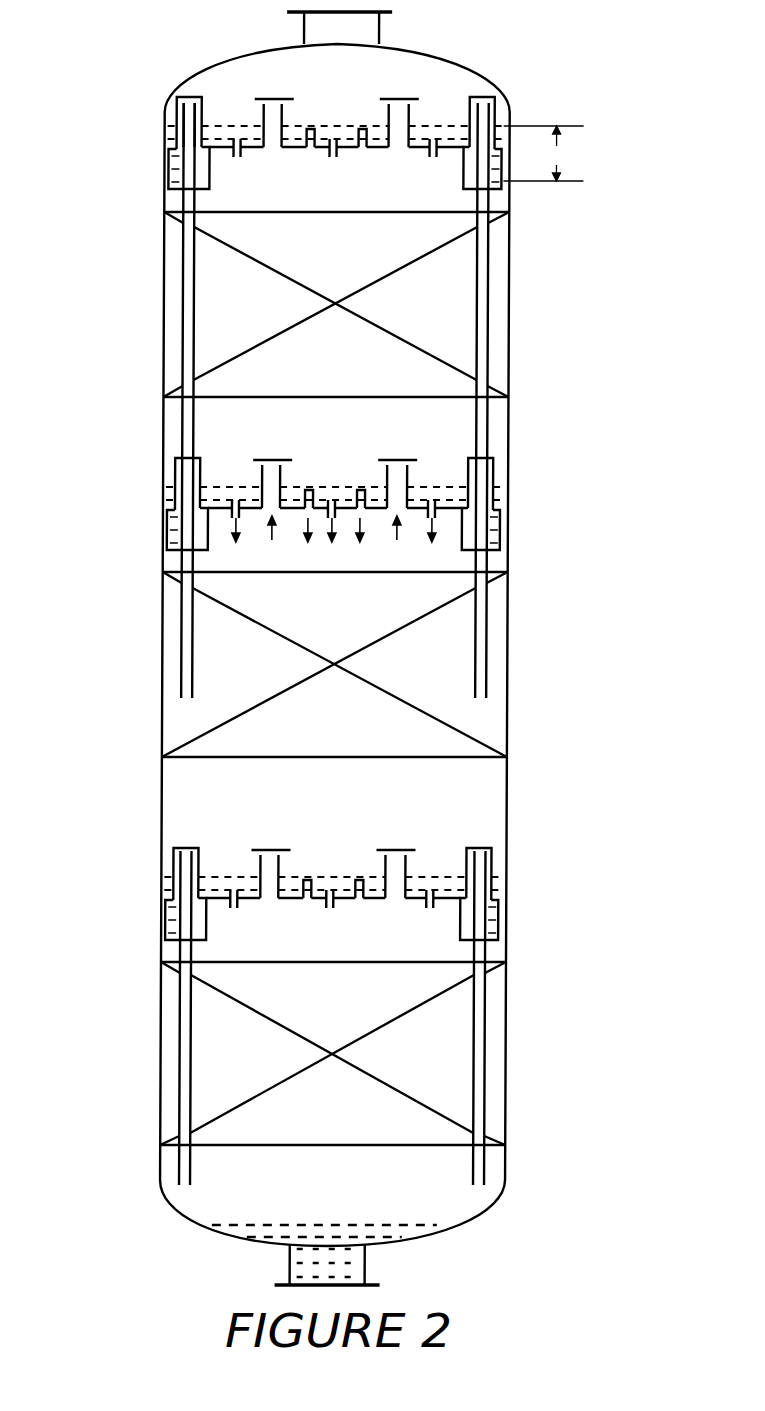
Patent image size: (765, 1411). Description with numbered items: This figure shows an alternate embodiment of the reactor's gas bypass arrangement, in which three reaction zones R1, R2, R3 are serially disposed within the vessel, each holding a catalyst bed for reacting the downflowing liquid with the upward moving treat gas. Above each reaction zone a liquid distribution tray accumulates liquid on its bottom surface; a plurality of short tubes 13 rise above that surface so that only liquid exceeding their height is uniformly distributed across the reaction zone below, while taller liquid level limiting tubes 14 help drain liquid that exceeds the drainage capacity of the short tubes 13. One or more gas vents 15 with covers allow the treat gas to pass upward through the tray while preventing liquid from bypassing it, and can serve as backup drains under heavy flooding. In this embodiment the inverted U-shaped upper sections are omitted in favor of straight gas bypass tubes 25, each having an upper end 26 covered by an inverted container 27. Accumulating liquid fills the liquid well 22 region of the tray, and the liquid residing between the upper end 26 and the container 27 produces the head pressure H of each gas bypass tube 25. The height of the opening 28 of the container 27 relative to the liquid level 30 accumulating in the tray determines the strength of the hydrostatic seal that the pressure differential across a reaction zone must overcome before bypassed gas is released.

The short tubes 13 is at (335, 138).
The liquid level limiting tubes 14 is at (310, 128).
The gas vents 15 is at (420, 123).
The liquid well 22 is at (210, 187).
The straight gas bypass tubes 25 is at (190, 295).
The upper ends 26 is at (187, 132).
The inverted container 27 is at (177, 107).
The opening 28 is at (167, 178).
The liquid level 30 is at (225, 124).
The reaction zone R1 is at (395, 273).
The reaction zone R2 is at (380, 640).
The reaction zone R3 is at (388, 1025).
The head pressure H is at (543, 153).